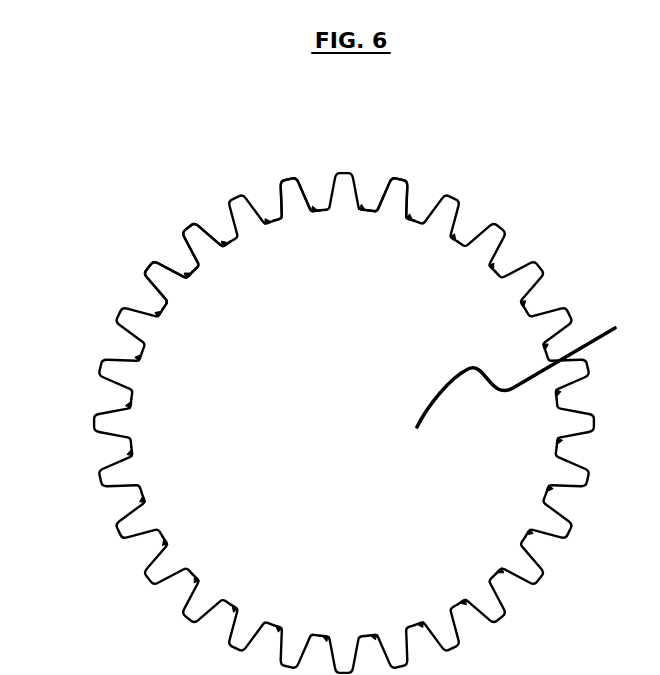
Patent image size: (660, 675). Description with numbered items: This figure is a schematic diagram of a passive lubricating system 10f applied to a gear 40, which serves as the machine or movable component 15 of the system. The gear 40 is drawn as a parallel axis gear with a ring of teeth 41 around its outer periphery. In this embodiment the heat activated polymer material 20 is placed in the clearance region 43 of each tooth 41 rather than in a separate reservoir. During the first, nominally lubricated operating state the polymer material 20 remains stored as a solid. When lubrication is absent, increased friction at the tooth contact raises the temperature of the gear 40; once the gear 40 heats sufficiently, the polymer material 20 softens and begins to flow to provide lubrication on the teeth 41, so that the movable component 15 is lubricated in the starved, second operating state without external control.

The lubricating system 10f is at (52, 231).
The machine or movable component 15 is at (402, 168).
The heat activated polymer material 20 is at (229, 242).
The gear 40 is at (528, 366).
The tooth 41 is at (288, 202).
The clearance region 43 is at (174, 255).